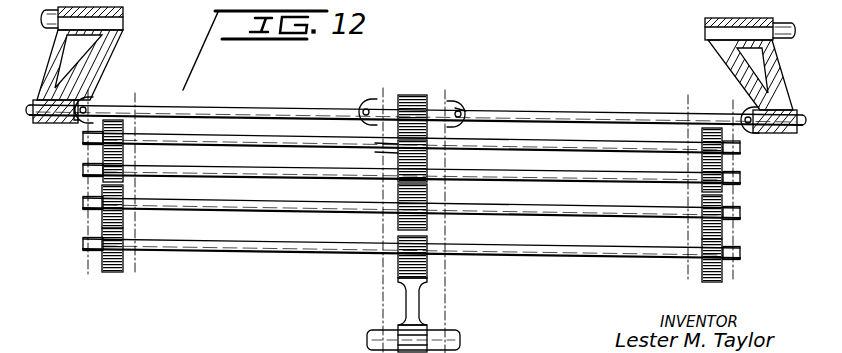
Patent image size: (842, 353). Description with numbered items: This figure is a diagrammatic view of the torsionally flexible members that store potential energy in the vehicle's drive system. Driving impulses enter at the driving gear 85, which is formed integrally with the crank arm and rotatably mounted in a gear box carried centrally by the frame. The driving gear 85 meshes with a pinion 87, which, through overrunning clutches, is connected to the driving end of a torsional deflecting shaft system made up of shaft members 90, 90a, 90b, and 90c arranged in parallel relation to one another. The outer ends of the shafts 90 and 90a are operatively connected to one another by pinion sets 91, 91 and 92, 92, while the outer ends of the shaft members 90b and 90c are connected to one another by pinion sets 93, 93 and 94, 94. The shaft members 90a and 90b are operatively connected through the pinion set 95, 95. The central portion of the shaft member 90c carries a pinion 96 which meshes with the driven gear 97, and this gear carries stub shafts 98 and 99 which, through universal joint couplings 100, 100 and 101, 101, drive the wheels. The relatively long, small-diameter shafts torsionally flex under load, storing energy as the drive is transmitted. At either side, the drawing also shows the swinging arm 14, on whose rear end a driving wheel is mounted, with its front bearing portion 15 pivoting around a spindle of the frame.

The swinging arm 14 is at (100, 56).
The front bearing portion 15 is at (728, 60).
The driving gear 85 is at (412, 298).
The pinion 87 is at (398, 257).
The shaft member 90 is at (527, 251).
The shaft member 90a is at (540, 210).
The shaft member 90b is at (550, 175).
The shaft member 90c is at (553, 143).
The pinion set 91 is at (125, 196).
The pinion set 92 is at (722, 240).
The pinion set 93 is at (125, 125).
The pinion set 94 is at (700, 134).
The pinion set 95 is at (427, 167).
The pinion 96 is at (385, 149).
The driven gear 97 is at (427, 98).
The stub shaft 98 is at (383, 97).
The stub shaft 99 is at (462, 107).
The universal joint coupling 100 is at (88, 101).
The universal joint coupling 101 is at (467, 123).